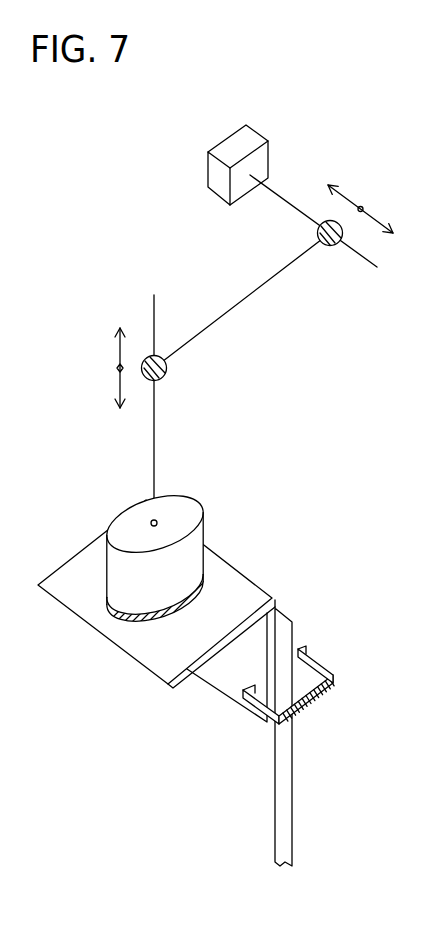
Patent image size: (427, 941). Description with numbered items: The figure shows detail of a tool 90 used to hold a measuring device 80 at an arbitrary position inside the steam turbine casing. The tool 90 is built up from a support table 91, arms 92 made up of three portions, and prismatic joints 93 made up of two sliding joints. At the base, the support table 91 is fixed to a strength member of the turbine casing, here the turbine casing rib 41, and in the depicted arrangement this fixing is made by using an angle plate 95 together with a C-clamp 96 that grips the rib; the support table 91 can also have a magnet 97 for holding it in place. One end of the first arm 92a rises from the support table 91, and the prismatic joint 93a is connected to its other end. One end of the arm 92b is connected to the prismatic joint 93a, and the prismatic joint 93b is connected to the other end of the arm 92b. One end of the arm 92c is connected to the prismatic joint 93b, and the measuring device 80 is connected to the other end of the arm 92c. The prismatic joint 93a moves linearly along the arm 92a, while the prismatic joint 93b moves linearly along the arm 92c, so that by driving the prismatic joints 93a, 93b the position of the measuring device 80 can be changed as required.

The tool 90 is at (93, 226).
The measuring device 80 is at (257, 133).
The arm 92 is at (266, 330).
The arm 92a is at (154, 445).
The arm 92b is at (248, 296).
The arm 92c is at (287, 202).
The prismatic joint 93 is at (260, 301).
The prismatic joint 93a is at (167, 368).
The prismatic joint 93b is at (329, 246).
The support table 91 is at (127, 510).
The magnet 97 is at (203, 575).
The angle plate 95 is at (88, 624).
The C-clamp 96 is at (310, 690).
The turbine casing rib 41 is at (295, 805).